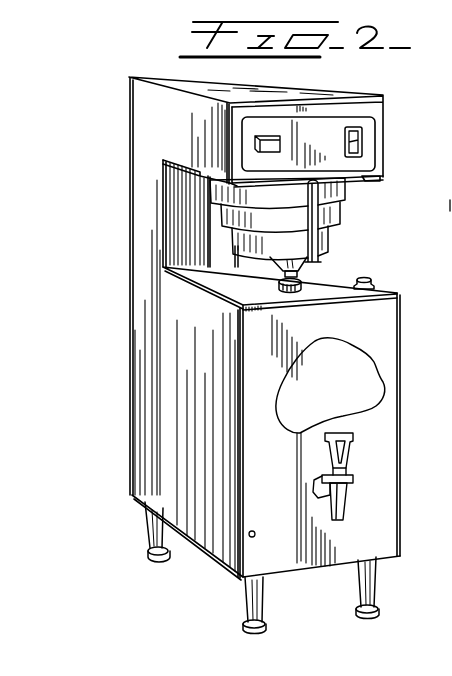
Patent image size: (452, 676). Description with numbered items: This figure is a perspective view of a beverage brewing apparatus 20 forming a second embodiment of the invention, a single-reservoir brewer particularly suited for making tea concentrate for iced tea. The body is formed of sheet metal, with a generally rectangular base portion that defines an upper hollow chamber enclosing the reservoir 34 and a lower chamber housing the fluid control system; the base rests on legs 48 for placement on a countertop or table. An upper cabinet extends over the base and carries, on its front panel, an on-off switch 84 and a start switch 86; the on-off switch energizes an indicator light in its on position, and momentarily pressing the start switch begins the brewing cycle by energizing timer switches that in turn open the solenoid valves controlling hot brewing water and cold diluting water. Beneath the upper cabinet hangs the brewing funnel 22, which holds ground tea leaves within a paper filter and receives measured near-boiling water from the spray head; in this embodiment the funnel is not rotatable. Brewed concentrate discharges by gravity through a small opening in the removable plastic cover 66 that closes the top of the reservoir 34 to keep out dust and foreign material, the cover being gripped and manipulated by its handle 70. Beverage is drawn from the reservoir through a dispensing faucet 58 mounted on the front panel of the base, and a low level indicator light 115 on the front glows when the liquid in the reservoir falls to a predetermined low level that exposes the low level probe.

The beverage brewing apparatus 20 is at (346, 236).
The brewing funnel 22 is at (234, 240).
The on-off switch 84 is at (328, 139).
The start switch 86 is at (358, 136).
The removable plastic cover 66 is at (335, 282).
The handle 70 is at (373, 279).
The reservoir 34 is at (365, 388).
The beverage dispensing faucet 58 is at (346, 496).
The low level indicator light 115 is at (252, 528).
The legs 48 is at (362, 590).